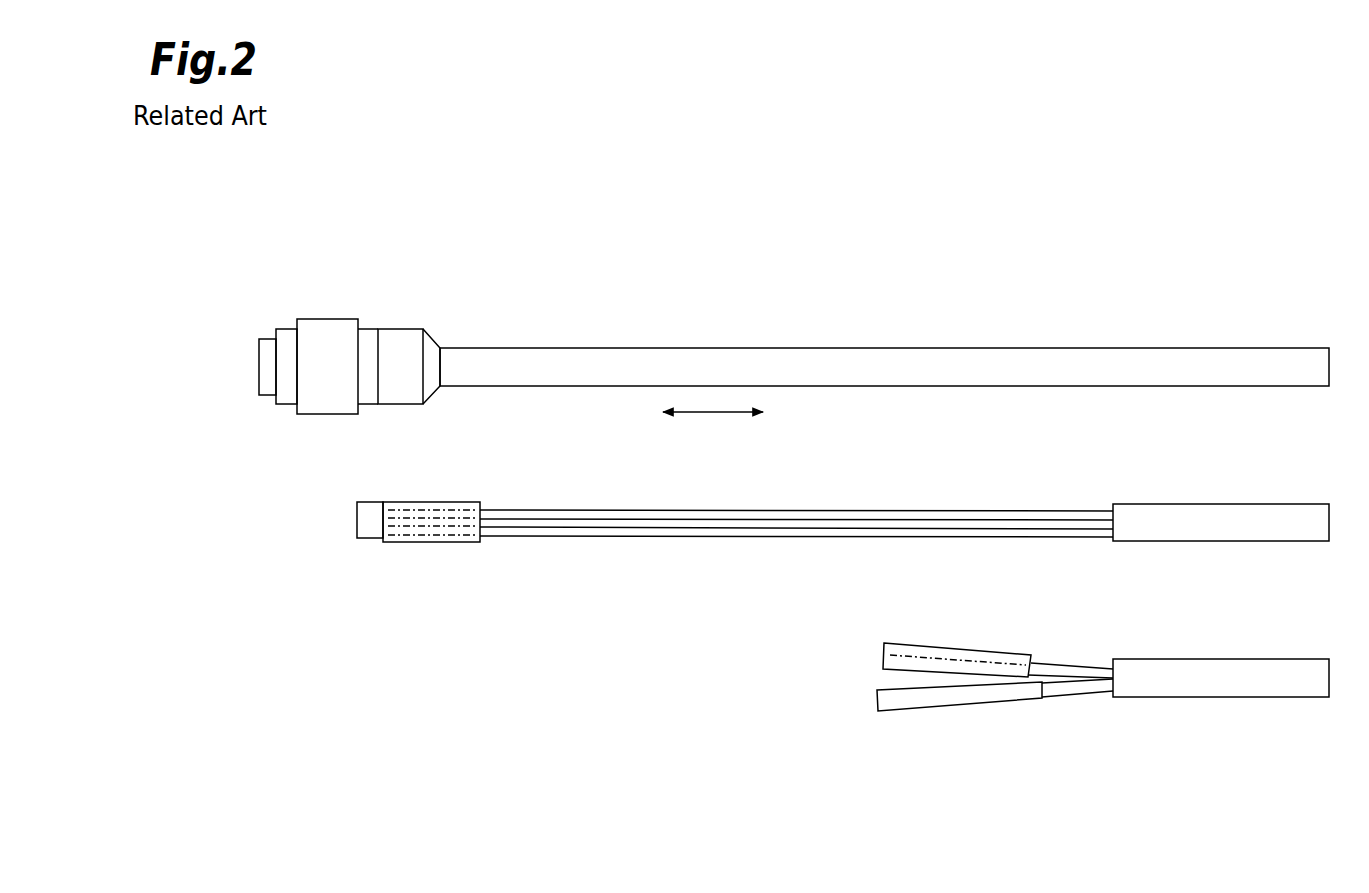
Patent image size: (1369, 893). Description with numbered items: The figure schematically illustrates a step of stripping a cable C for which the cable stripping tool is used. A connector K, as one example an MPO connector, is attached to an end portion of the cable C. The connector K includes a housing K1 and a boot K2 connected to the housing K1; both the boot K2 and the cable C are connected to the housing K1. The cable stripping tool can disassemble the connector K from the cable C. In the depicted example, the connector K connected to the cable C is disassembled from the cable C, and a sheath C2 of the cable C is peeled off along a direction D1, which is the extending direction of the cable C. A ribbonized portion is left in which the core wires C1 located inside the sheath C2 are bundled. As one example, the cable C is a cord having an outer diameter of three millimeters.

The connector K is at (349, 361).
The housing K1 is at (328, 402).
The boot K2 is at (399, 394).
The cable C is at (674, 344).
The core wires C1 is at (557, 528).
The sheath C2 is at (572, 354).
The direction D1 is at (713, 428).